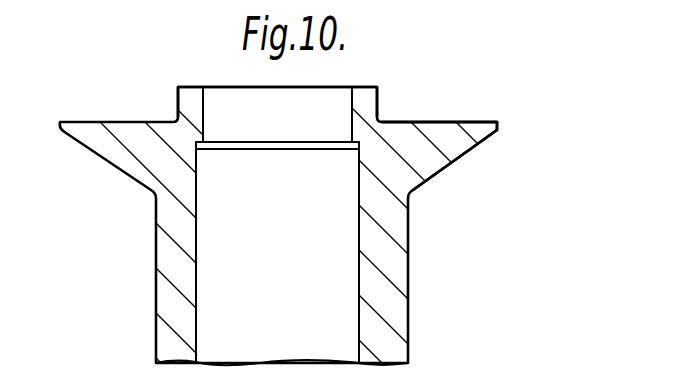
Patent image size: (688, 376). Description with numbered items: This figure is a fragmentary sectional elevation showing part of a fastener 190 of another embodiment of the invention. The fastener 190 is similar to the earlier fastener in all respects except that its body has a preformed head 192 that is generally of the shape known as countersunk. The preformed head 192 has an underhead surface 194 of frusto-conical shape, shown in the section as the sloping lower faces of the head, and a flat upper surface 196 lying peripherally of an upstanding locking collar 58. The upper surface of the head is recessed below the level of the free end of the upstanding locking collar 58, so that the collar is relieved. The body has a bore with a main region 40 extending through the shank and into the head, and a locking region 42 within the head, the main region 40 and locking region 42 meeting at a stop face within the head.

The fastener 190 is at (424, 292).
The preformed head 192 is at (498, 130).
The underhead surface 194 is at (447, 163).
The flat upper surface 196 is at (426, 122).
The upstanding locking collar 58 is at (378, 97).
The locking region 42 is at (285, 122).
The main region 40 is at (282, 262).